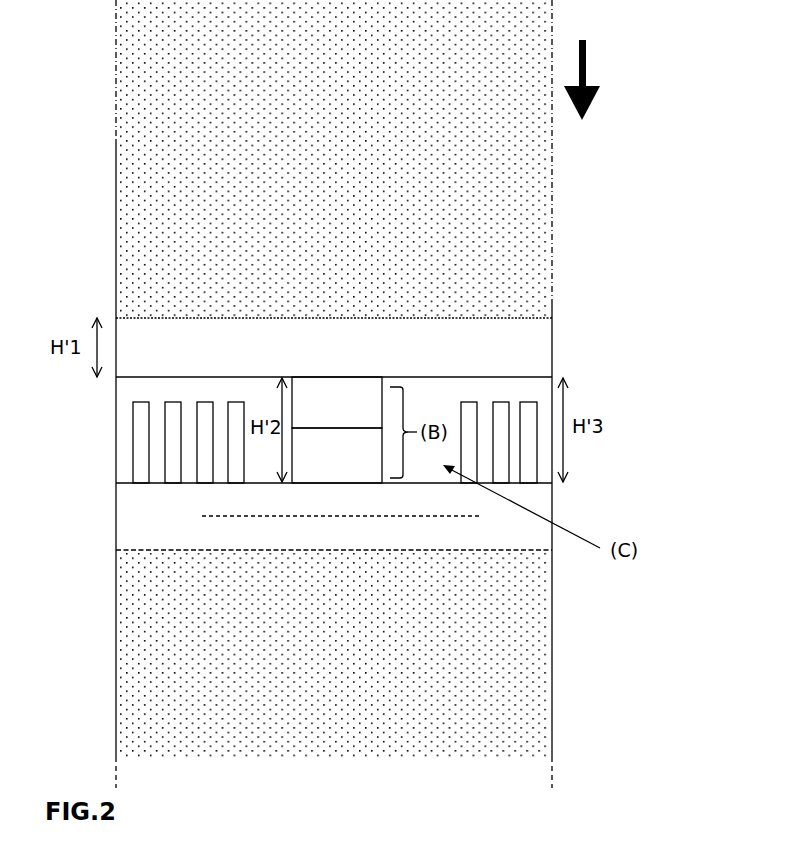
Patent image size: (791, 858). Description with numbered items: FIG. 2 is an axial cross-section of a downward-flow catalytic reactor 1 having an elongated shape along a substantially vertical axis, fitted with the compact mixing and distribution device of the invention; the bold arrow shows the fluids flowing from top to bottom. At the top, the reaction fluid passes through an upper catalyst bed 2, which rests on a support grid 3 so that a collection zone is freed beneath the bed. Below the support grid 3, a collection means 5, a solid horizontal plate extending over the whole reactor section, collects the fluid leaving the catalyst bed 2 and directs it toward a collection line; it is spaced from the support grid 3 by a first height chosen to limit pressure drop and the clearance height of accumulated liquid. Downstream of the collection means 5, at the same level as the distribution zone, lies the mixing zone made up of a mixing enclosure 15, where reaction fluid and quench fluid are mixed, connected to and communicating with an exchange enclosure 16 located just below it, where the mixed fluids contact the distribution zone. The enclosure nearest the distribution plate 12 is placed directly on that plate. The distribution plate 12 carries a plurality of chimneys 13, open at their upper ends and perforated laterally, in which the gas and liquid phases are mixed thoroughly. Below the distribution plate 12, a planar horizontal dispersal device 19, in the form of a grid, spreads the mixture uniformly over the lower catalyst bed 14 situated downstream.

The reactor 1 is at (116, 205).
The catalyst bed 2 is at (329, 168).
The support grid 3 is at (119, 318).
The collection means 5 is at (503, 377).
The distribution plate 12 is at (155, 478).
The chimneys 13 is at (525, 425).
The catalyst bed 14 is at (343, 644).
The mixing enclosure 15 is at (347, 408).
The exchange enclosure 16 is at (347, 474).
The dispersal device 19 is at (460, 517).